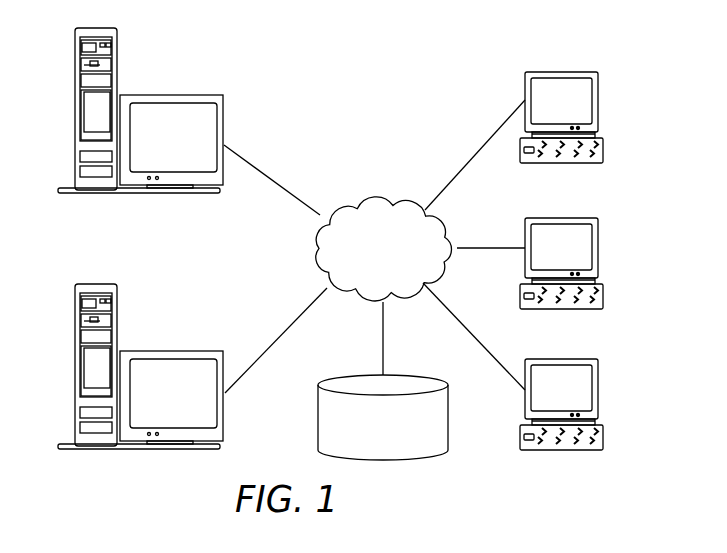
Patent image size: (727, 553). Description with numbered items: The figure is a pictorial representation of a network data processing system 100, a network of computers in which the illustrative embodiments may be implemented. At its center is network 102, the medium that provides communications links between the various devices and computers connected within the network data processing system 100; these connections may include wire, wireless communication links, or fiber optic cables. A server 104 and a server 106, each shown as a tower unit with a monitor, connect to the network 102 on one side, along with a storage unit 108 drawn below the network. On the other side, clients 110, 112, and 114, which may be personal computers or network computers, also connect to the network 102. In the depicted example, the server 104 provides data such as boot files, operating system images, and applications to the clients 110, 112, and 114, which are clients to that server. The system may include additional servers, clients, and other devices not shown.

The network data processing system 100 is at (434, 79).
The network 102 is at (356, 196).
The server 104 is at (74, 110).
The server 106 is at (74, 367).
The storage unit 108 is at (400, 461).
The client 110 is at (598, 102).
The client 112 is at (598, 248).
The client 114 is at (598, 390).